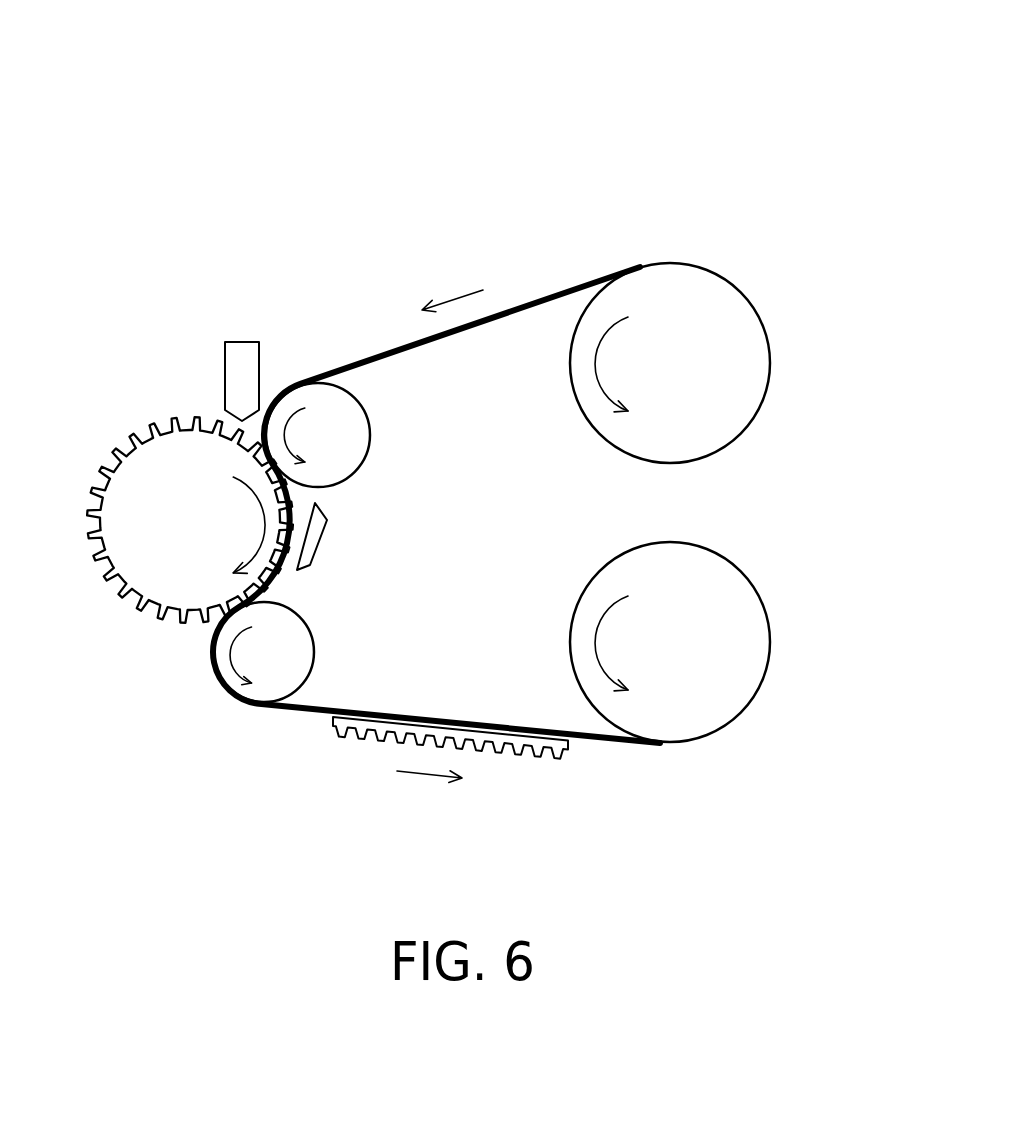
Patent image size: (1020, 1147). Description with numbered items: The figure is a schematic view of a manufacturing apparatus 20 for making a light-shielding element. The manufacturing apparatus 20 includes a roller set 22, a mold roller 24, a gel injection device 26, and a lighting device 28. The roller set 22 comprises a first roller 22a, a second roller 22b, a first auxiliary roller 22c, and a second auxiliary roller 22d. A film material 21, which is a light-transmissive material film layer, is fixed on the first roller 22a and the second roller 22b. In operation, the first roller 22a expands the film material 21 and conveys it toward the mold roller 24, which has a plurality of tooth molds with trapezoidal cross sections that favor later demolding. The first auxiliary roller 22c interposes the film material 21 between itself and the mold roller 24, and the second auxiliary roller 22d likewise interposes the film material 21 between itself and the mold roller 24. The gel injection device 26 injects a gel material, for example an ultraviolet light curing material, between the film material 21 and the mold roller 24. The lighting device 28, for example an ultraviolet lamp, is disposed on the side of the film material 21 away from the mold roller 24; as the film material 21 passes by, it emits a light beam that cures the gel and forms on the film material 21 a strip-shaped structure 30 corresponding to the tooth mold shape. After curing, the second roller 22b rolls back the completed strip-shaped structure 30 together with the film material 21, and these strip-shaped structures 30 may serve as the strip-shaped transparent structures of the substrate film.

The manufacturing apparatus 20 is at (792, 898).
The film material 21 is at (545, 297).
The roller set 22 is at (722, 13).
The first roller 22a is at (738, 309).
The second roller 22b is at (738, 589).
The first auxiliary roller 22c is at (301, 398).
The second auxiliary roller 22d is at (248, 694).
The mold roller 24 is at (122, 484).
The gel injection device 26 is at (241, 353).
The lighting device 28 is at (318, 541).
The strip-shaped structure 30 is at (567, 743).